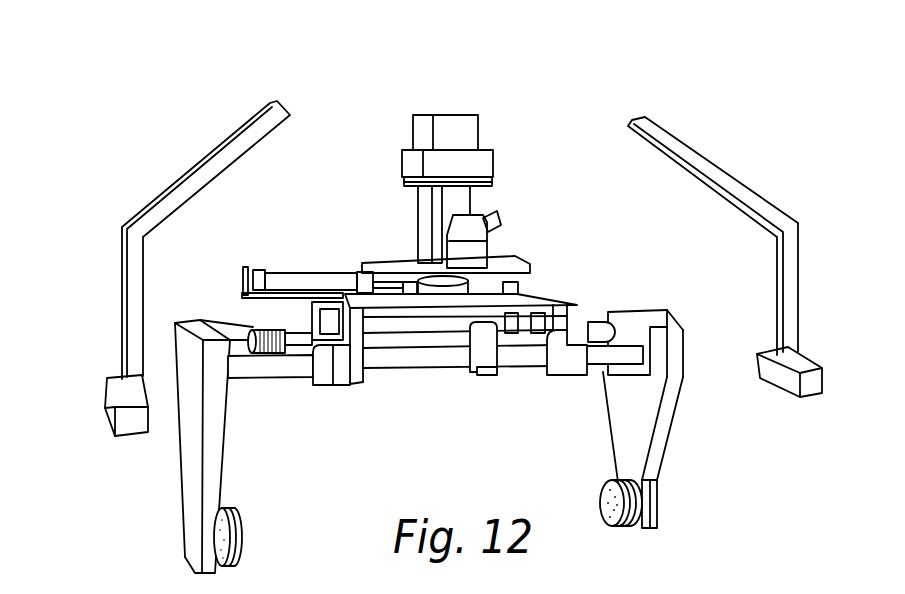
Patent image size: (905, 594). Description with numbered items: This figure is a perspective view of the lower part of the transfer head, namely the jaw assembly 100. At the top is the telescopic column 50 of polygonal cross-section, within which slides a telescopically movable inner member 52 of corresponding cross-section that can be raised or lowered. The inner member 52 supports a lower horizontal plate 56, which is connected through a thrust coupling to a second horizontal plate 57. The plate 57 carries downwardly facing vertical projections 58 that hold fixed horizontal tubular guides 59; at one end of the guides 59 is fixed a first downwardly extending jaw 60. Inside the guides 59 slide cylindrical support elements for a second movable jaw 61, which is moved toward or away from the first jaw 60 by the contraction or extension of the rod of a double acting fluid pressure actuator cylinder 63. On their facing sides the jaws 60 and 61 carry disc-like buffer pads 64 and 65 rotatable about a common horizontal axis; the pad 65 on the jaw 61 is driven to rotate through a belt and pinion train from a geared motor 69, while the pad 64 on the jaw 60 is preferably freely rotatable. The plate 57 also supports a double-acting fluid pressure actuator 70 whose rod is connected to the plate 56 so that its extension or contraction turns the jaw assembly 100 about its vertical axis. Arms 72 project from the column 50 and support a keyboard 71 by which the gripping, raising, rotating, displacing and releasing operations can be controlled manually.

The telescopic column 50 is at (470, 132).
The inner member 52 is at (423, 215).
The lower horizontal plate 56 is at (515, 262).
The second horizontal plate 57 is at (548, 290).
The vertical projections 58 is at (367, 378).
The horizontal tubular guides 59 is at (273, 366).
The first jaw 60 is at (190, 445).
The second movable jaw 61 is at (633, 443).
The double acting fluid pressure actuator cylinder 63 is at (522, 335).
The buffer pad 64 is at (238, 543).
The buffer pad 65 is at (605, 520).
The geared motor 69 is at (257, 331).
The double-acting fluid pressure actuator 70 is at (307, 278).
The keyboard 71 is at (108, 410).
The arms 72 is at (220, 163).
The jaw assembly 100 is at (676, 521).